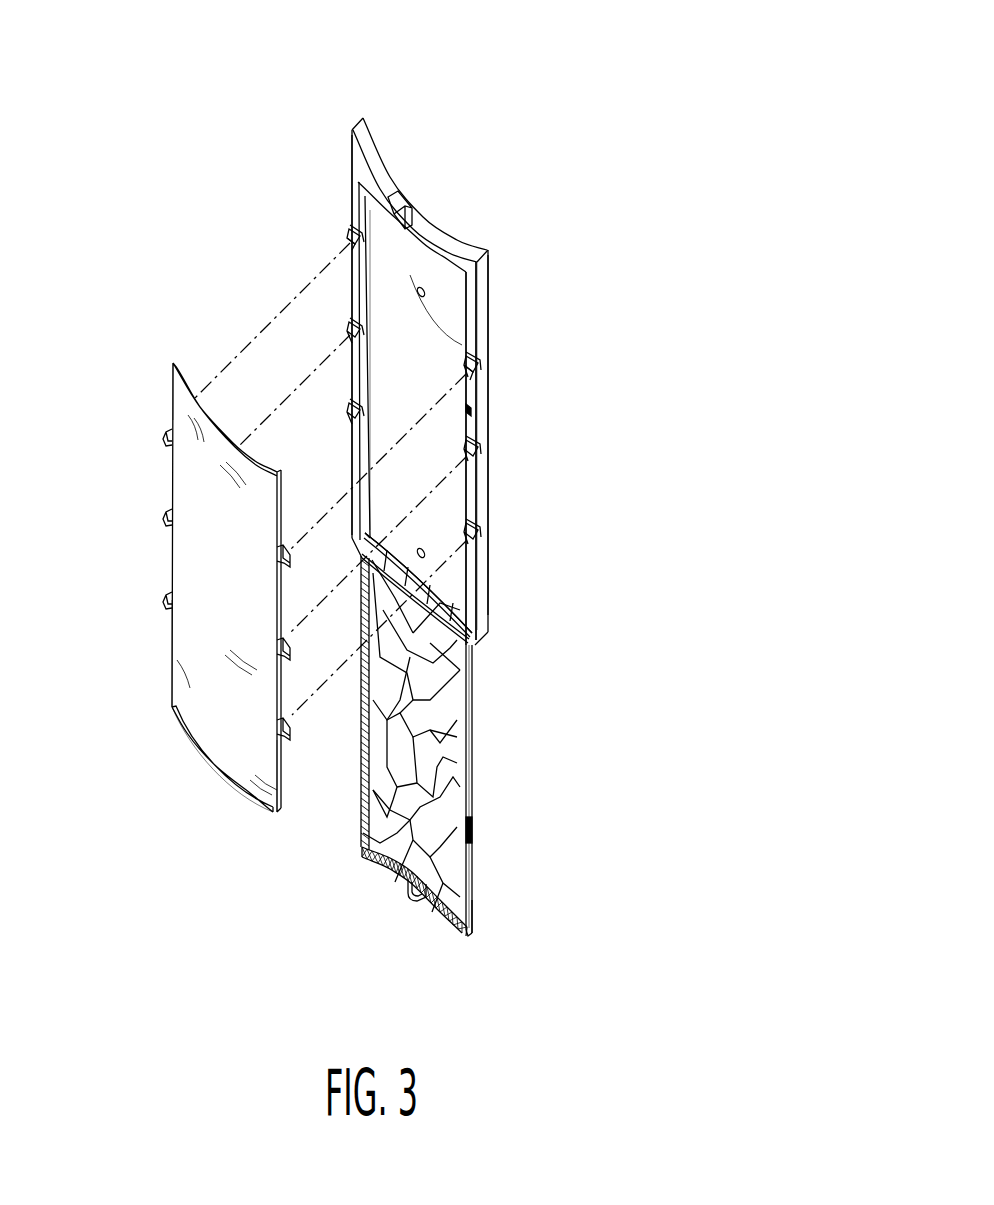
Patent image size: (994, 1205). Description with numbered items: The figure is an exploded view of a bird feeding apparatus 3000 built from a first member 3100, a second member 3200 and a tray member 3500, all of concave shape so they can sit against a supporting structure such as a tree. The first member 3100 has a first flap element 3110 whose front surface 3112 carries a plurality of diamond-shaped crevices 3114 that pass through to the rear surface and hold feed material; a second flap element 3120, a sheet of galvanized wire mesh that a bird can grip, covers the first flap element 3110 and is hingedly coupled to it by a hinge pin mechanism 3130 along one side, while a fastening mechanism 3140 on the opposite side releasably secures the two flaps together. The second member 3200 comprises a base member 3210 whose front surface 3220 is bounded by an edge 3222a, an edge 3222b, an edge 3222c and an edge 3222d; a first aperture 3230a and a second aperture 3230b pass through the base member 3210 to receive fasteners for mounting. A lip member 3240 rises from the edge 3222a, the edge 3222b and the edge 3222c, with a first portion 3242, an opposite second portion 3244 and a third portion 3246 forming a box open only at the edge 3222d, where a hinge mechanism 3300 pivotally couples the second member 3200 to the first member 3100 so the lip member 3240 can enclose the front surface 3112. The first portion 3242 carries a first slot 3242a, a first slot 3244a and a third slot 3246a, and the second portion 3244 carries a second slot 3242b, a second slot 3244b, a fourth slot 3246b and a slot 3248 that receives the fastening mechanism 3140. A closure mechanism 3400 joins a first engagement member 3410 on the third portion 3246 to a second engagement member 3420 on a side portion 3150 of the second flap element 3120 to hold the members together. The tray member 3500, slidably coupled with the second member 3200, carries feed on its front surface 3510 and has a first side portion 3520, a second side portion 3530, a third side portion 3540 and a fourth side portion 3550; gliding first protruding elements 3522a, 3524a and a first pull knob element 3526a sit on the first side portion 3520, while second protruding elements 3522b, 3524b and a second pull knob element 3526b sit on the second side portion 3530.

The bird feeding apparatus 3000 is at (693, 106).
The first member 3100 is at (486, 765).
The first flap element 3110 is at (474, 903).
The front surface 3112 is at (440, 815).
The plurality of crevices 3114 is at (473, 778).
The second flap element 3120 is at (478, 692).
The hinge pin mechanism 3130 is at (363, 737).
The fastening mechanism 3140 is at (474, 835).
The side portion 3150 is at (455, 928).
The second member 3200 is at (340, 96).
The base member 3210 is at (428, 273).
The front surface 3220 is at (435, 380).
The edge 3222a is at (371, 162).
The edge 3222b is at (487, 527).
The edge 3222c is at (357, 298).
The edge 3222d is at (460, 612).
The first aperture 3230a is at (474, 312).
The second aperture 3230b is at (426, 560).
The lip member 3240 is at (496, 327).
The first portion 3242 is at (351, 230).
The first slot 3242a is at (353, 242).
The second slot 3242b is at (478, 370).
The second portion 3244 is at (480, 336).
The first slot 3244a is at (352, 410).
The second slot 3244b is at (477, 537).
The third portion 3246 is at (470, 256).
The third slot 3246a is at (352, 328).
The fourth slot 3246b is at (477, 453).
The slot 3248 is at (475, 410).
The hinge mechanism 3300 is at (474, 712).
The closure mechanism 3400 is at (395, 887).
The first engagement member 3410 is at (401, 193).
The second engagement member 3420 is at (434, 902).
The tray member 3500 is at (160, 673).
The front surface 3510 is at (237, 565).
The first side portion 3520 is at (166, 626).
The first protruding element 3522a is at (165, 436).
The second protruding element 3522b is at (290, 557).
The first protruding element 3524a is at (165, 600).
The second protruding element 3524b is at (285, 731).
The first pull knob element 3526a is at (165, 516).
The second pull knob element 3526b is at (291, 661).
The second side portion 3530 is at (279, 789).
The third side portion 3540 is at (177, 367).
The fourth side portion 3550 is at (225, 783).